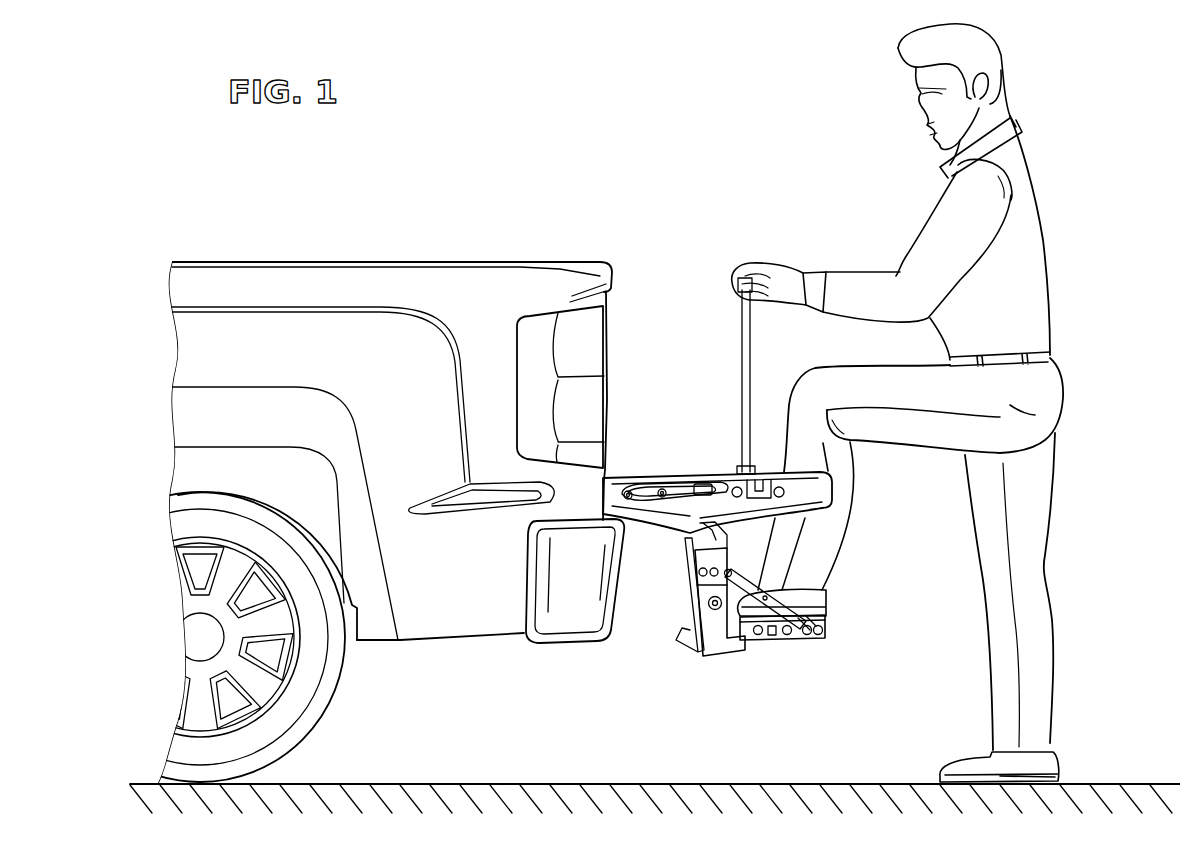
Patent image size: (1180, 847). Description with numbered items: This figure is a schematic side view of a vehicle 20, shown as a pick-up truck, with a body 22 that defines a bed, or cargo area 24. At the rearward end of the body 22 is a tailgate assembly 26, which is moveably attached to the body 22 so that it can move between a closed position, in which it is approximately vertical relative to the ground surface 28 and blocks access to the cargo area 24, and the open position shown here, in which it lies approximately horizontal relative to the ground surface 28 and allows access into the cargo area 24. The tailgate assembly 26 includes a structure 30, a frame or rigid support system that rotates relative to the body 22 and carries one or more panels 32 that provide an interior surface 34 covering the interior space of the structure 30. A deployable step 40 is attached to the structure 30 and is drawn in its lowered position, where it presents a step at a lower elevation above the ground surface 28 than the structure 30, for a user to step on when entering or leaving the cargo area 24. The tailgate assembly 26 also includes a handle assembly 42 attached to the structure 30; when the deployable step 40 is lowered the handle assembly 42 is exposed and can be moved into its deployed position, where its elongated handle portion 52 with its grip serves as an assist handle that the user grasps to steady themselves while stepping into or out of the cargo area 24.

The vehicle 20 is at (343, 440).
The body 22 is at (377, 262).
The cargo area 24 is at (405, 386).
The tailgate assembly 26 is at (725, 469).
The ground surface 28 is at (712, 783).
The structure 30 is at (752, 473).
The panels 32 is at (657, 478).
The interior surface 34 is at (692, 478).
The deployable step 40 is at (812, 645).
The handle assembly 42 is at (787, 376).
The handle portion 52 is at (752, 342).